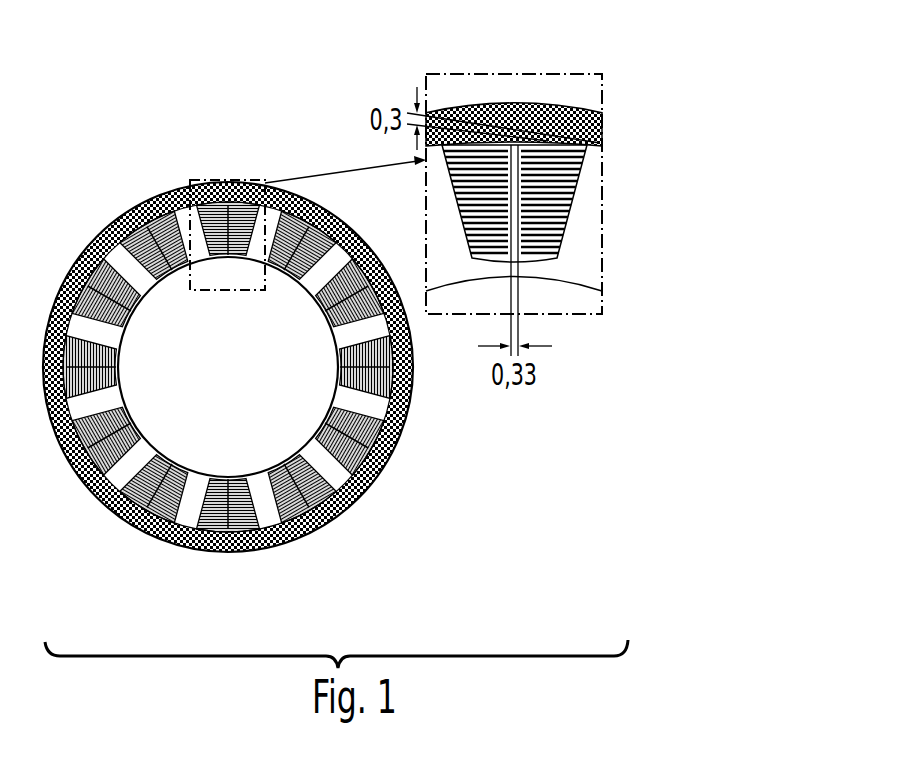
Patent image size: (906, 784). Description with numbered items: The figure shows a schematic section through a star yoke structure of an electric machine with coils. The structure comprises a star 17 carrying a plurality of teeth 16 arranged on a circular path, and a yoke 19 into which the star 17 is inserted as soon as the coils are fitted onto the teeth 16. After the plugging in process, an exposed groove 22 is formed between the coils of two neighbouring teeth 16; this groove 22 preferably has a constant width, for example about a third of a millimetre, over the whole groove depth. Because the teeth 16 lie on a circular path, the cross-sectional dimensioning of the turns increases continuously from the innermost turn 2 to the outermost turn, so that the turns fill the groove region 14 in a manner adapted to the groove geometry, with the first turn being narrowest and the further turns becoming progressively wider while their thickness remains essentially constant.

The innermost turn 2 is at (547, 152).
The groove region 14 is at (262, 233).
The tooth 16 is at (272, 530).
The star 17 is at (241, 383).
The yoke 19 is at (229, 200).
The exposed groove 22 is at (141, 233).